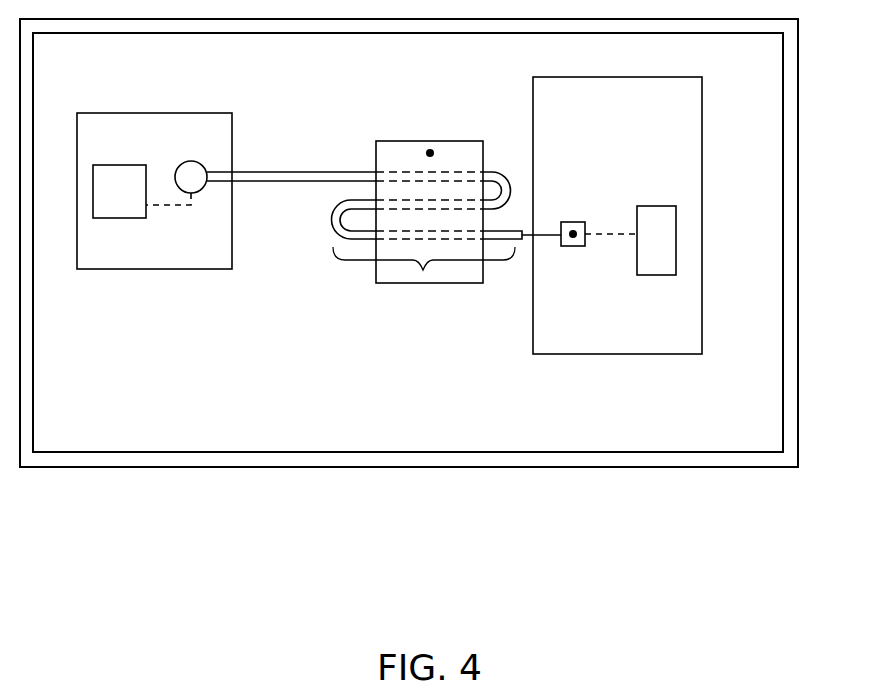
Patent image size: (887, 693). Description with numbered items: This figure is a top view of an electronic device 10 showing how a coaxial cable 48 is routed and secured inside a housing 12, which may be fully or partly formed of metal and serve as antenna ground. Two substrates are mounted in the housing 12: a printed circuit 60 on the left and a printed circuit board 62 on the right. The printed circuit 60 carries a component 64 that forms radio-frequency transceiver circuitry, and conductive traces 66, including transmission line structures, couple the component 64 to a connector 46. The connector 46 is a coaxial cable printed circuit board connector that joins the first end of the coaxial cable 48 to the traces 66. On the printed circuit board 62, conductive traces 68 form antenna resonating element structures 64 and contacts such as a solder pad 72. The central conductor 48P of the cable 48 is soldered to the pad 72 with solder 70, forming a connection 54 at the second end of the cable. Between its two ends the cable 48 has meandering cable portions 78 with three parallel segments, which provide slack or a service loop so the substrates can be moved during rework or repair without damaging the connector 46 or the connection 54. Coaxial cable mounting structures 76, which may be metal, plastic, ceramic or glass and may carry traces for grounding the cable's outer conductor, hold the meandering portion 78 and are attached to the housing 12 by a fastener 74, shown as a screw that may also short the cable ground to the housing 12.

The device 10 is at (213, 496).
The housing 12 is at (585, 467).
The connector 46 is at (191, 160).
The coaxial cable 48 is at (278, 170).
The central conductor 48P is at (545, 237).
The connection 54 is at (577, 186).
The printed circuit 60 is at (132, 262).
The printed circuit board 62 is at (608, 347).
The component 64 is at (110, 210).
The conductive traces 66 is at (181, 207).
The conductive traces 68 is at (605, 236).
The solder 70 is at (575, 233).
The solder pad 72 is at (573, 247).
The fastener 74 is at (432, 148).
The coaxial cable mounting structures 76 is at (390, 284).
The meandering cable portions 78 is at (423, 270).